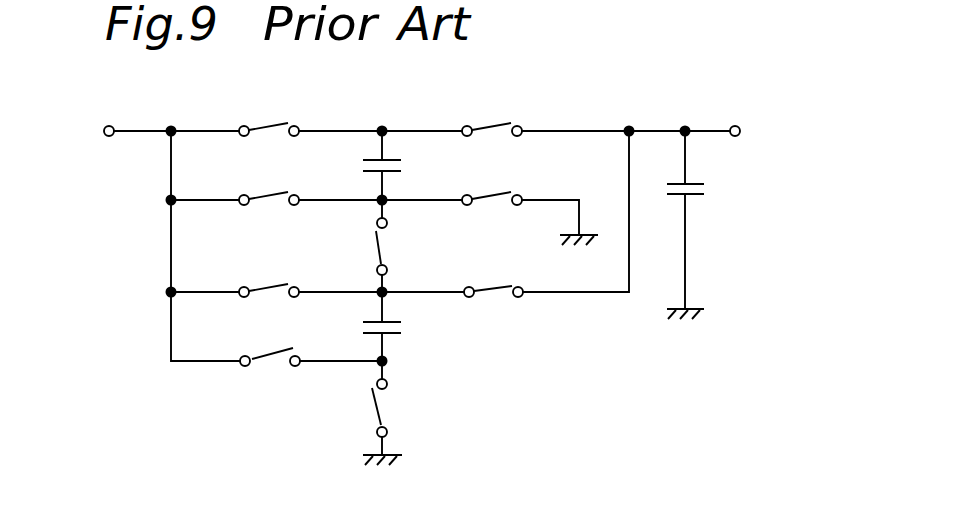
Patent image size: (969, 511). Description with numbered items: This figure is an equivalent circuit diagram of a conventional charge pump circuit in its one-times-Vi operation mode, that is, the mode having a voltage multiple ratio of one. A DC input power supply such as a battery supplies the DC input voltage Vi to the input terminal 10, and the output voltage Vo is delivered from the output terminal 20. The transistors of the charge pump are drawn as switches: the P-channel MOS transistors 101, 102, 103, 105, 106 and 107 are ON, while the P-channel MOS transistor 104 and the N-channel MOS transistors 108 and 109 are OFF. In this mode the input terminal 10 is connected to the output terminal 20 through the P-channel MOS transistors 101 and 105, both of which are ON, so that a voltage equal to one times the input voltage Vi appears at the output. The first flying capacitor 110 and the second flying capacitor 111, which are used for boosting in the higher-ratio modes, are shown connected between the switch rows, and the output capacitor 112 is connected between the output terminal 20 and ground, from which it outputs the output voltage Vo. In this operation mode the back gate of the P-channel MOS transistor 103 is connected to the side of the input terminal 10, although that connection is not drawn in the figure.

The input terminal 10 is at (110, 137).
The output terminal 20 is at (738, 124).
The P-channel MOS transistor 101 is at (276, 126).
The P-channel MOS transistor 102 is at (272, 197).
The P-channel MOS transistor 103 is at (272, 293).
The P-channel MOS transistor 104 is at (262, 362).
The P-channel MOS transistor 105 is at (499, 126).
The P-channel MOS transistor 106 is at (384, 249).
The P-channel MOS transistor 107 is at (493, 294).
The N-channel MOS transistor 108 is at (520, 194).
The N-channel MOS transistor 109 is at (384, 410).
The first flying capacitor 110 is at (360, 166).
The second flying capacitor 111 is at (397, 328).
The output capacitor 112 is at (702, 188).